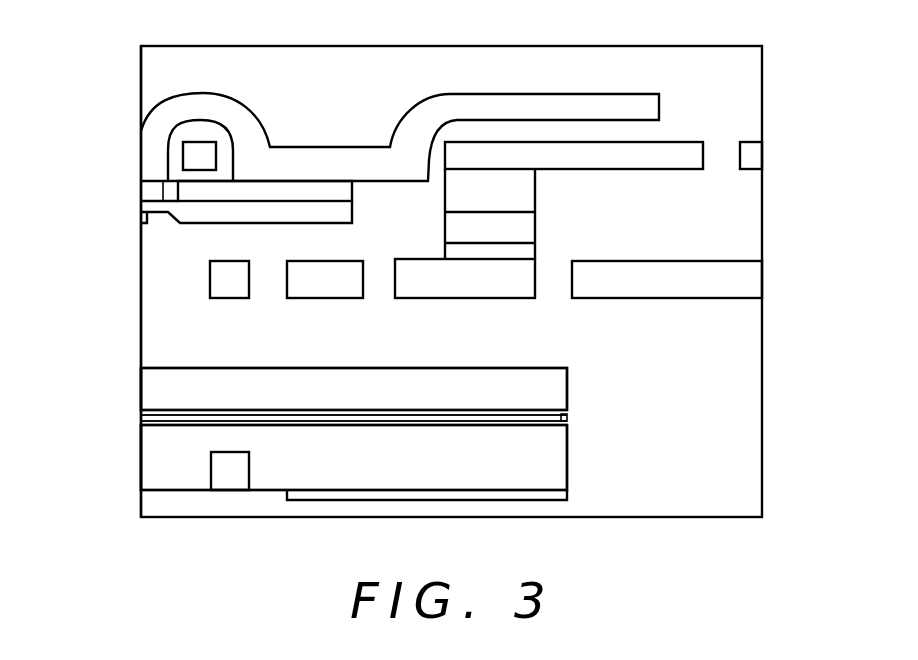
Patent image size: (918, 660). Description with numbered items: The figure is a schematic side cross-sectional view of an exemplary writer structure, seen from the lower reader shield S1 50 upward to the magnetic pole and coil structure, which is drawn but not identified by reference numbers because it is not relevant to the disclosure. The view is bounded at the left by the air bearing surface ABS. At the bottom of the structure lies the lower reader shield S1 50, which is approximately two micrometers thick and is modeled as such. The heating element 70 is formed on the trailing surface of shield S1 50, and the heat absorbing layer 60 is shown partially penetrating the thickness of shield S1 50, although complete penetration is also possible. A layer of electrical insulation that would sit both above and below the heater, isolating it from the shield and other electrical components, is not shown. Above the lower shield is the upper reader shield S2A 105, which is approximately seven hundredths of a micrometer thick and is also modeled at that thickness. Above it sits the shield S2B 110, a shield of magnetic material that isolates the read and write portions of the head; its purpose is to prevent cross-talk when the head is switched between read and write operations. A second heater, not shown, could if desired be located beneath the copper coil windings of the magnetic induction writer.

The shield S2B 110 is at (150, 384).
The upper reader shield S2A 105 is at (150, 416).
The lower reader shield S1 50 is at (150, 464).
The heat absorbing layer 60 is at (228, 484).
The heating element 70 is at (337, 496).
The air bearing surface ABS is at (140, 293).
The shield S2B is at (354, 389).
The upper reader shield S2A is at (567, 418).
The lower reader shield S1 is at (354, 457).